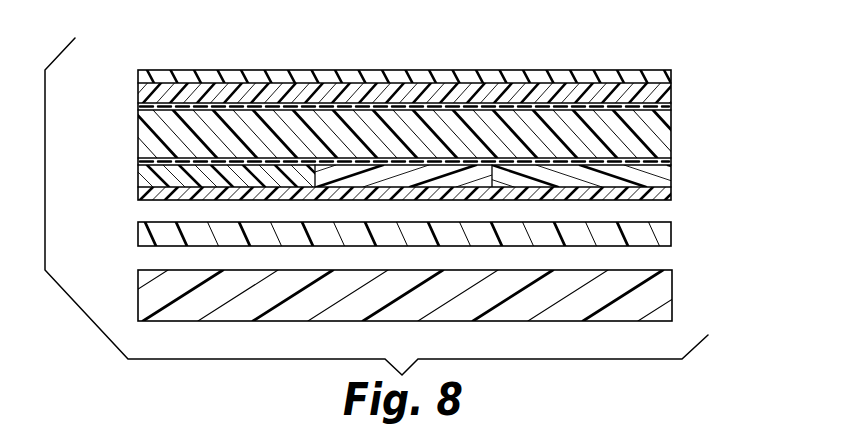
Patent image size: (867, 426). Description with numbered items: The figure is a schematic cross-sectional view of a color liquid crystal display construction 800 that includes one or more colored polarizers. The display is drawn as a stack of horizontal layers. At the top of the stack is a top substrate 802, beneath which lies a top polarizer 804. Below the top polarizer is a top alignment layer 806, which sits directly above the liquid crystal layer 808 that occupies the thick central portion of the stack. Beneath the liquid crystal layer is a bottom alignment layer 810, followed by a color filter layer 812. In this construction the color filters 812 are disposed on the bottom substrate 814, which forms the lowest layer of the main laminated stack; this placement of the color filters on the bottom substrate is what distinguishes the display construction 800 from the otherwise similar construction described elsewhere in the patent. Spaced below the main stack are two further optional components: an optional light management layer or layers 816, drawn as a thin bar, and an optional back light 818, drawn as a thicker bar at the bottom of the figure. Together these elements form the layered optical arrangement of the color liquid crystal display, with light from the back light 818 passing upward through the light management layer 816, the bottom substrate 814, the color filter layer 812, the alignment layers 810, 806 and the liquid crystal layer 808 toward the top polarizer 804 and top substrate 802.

The color liquid crystal display construction 800 is at (624, 43).
The top substrate 802 is at (546, 74).
The top polarizer 804 is at (658, 100).
The top alignment layer 806 is at (662, 108).
The liquid crystal layer 808 is at (147, 122).
The bottom alignment layer 810 is at (147, 160).
The color filter layer 812 is at (662, 171).
The bottom substrate 814 is at (660, 194).
The light management layer or layers 816 is at (146, 239).
The back light 818 is at (244, 306).